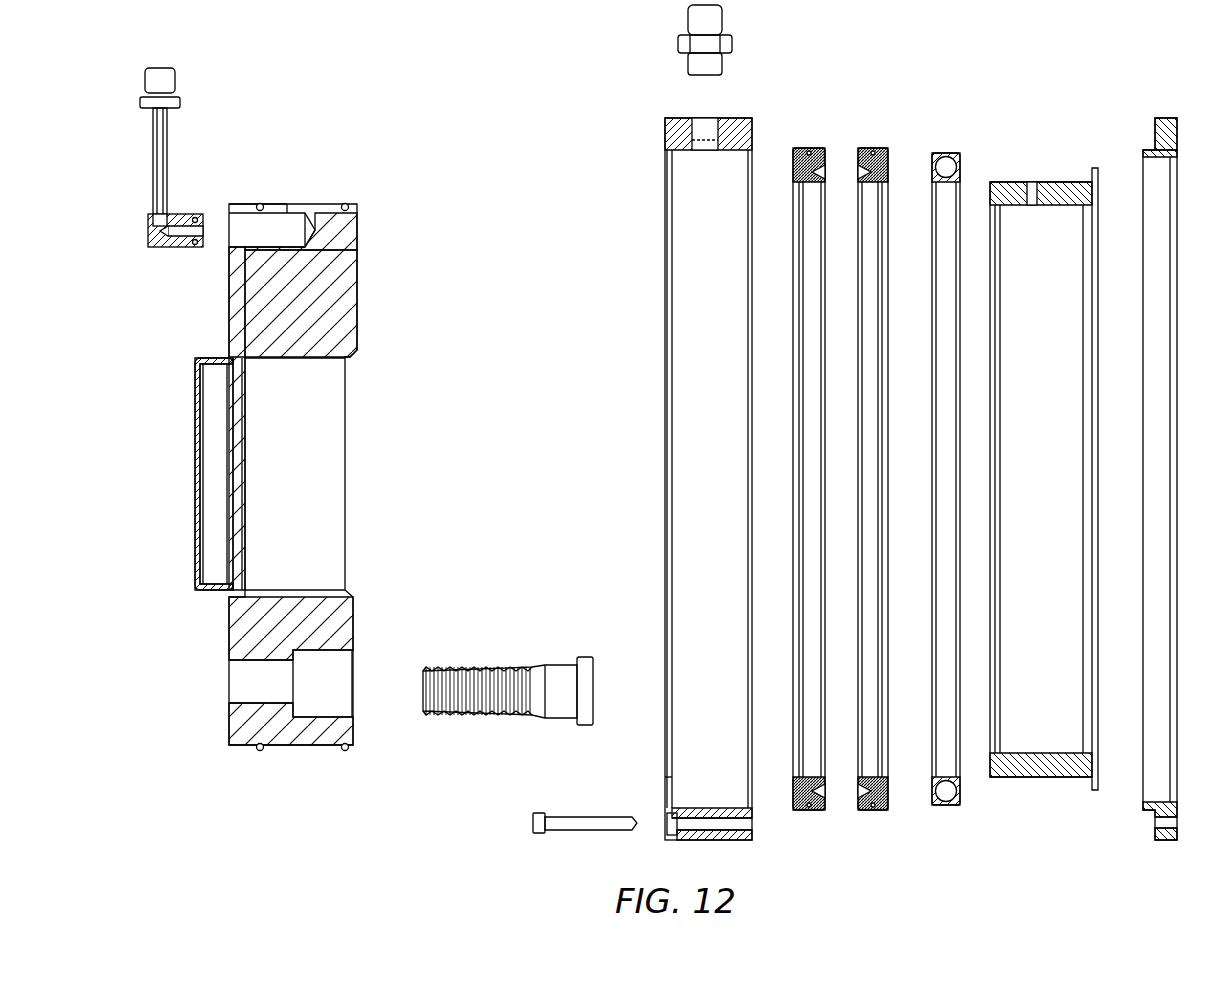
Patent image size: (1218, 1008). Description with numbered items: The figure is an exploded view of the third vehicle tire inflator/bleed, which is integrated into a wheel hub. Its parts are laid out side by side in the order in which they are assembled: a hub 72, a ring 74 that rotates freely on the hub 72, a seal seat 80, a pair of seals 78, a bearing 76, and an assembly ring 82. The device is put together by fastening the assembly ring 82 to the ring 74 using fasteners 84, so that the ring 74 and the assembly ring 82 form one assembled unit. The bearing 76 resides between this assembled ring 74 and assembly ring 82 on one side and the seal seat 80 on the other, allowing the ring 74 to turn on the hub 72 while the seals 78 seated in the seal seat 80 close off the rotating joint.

The hub 72 is at (335, 285).
The ring 74 is at (675, 140).
The bearing 76 is at (952, 158).
The seals 78 is at (792, 129).
The seal seat 80 is at (1050, 192).
The assembly ring 82 is at (1167, 120).
The fasteners 84 is at (582, 825).